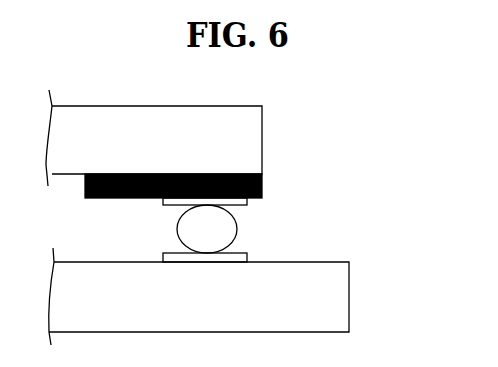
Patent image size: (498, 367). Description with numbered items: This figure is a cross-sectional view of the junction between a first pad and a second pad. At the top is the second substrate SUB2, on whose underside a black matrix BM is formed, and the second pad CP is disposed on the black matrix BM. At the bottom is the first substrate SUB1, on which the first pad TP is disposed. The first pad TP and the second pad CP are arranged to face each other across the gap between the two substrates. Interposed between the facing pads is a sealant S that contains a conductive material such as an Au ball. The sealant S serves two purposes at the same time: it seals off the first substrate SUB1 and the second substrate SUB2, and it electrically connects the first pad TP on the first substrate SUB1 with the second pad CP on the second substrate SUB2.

The second substrate SUB2 is at (250, 140).
The black matrix BM is at (262, 186).
The second pad CP is at (244, 203).
The sealant S is at (227, 228).
The first pad TP is at (247, 257).
The first substrate SUB1 is at (338, 300).